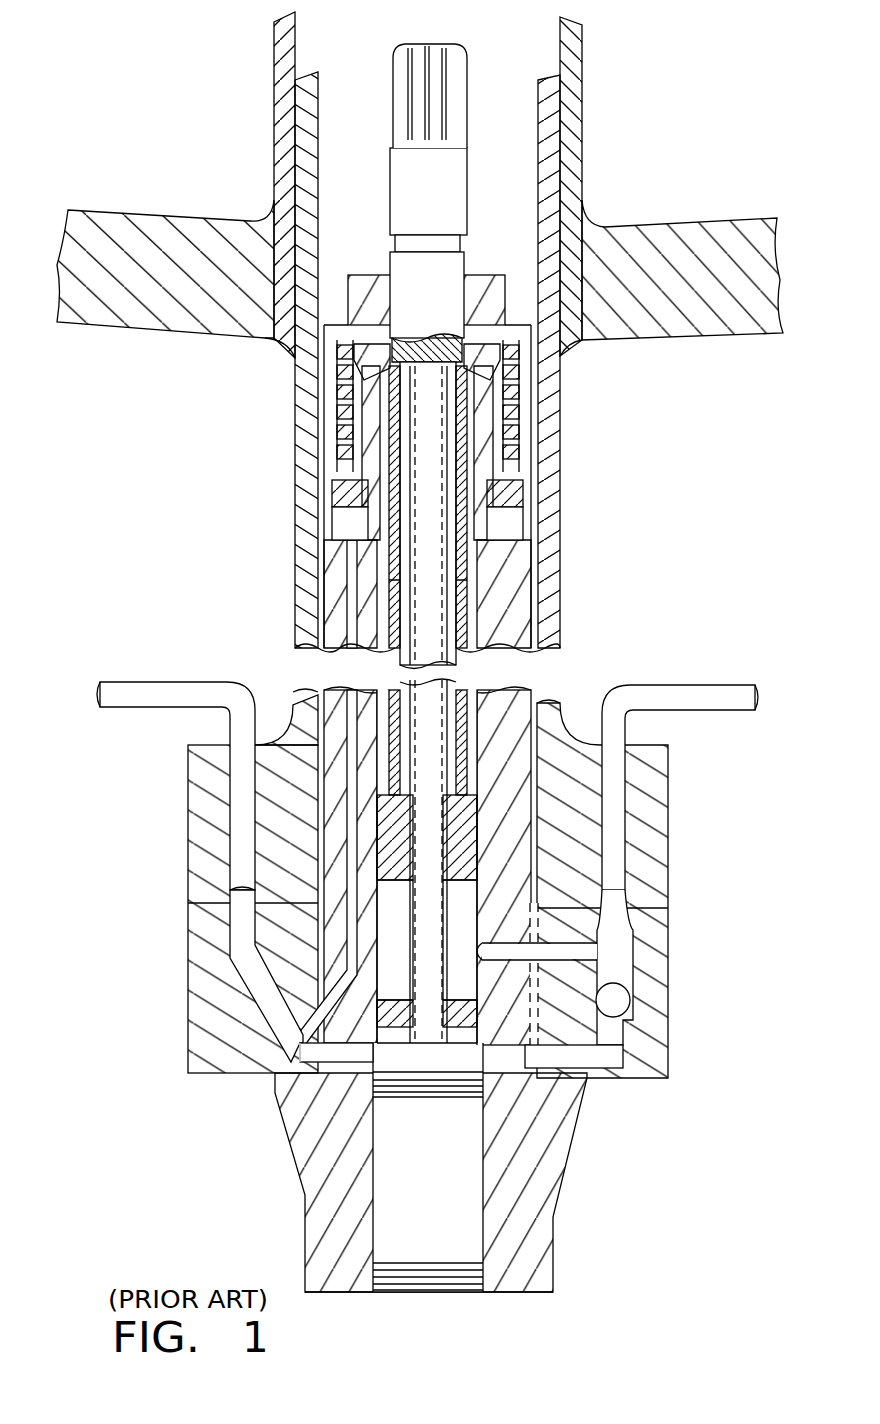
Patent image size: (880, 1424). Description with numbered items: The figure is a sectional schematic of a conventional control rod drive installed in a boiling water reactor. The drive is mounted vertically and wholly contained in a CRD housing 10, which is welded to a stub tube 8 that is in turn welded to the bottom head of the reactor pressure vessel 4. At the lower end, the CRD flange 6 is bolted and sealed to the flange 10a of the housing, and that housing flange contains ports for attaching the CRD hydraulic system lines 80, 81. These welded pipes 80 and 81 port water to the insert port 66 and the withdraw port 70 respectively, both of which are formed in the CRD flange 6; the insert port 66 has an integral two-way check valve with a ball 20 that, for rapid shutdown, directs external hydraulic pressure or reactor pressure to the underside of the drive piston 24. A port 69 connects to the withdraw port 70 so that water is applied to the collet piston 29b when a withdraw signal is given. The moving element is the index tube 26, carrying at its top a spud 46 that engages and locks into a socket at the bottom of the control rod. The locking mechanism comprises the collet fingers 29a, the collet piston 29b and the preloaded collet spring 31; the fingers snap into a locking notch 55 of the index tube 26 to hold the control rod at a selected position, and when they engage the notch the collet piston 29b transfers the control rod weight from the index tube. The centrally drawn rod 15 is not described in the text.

The reactor pressure vessel 4 is at (192, 222).
The CRD flange 6 is at (553, 1228).
The stub tube 8 is at (575, 128).
The CRD housing 10 is at (300, 598).
The flange of the CRD housing 10a is at (668, 877).
The center rod 15 is at (447, 578).
The ball 20 is at (620, 985).
The drive piston 24 is at (467, 842).
The index tube 26 is at (467, 623).
The collet fingers 29a is at (503, 366).
The collet piston 29b is at (340, 500).
The collet spring 31 is at (342, 443).
The spud 46 is at (462, 57).
The index tube locking notch 55 is at (460, 700).
The insert port 66 is at (612, 910).
The port 69 is at (310, 1010).
The withdraw port 70 is at (243, 922).
The welded pipe 80 is at (703, 690).
The welded pipe 81 is at (140, 681).